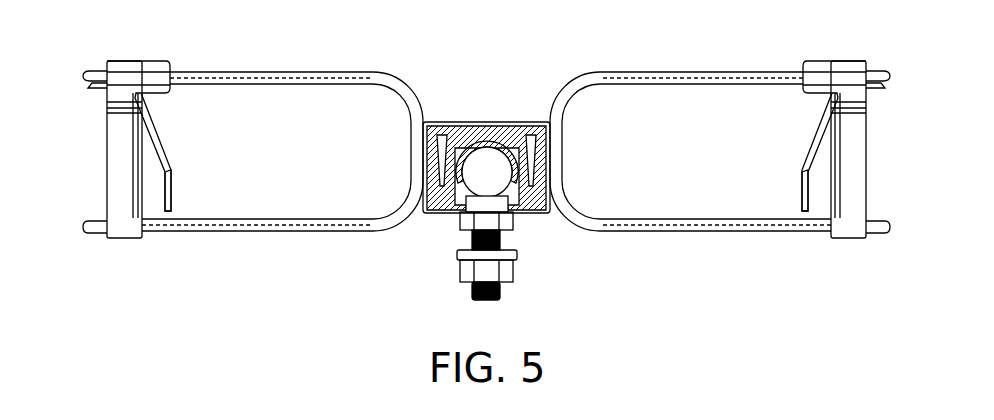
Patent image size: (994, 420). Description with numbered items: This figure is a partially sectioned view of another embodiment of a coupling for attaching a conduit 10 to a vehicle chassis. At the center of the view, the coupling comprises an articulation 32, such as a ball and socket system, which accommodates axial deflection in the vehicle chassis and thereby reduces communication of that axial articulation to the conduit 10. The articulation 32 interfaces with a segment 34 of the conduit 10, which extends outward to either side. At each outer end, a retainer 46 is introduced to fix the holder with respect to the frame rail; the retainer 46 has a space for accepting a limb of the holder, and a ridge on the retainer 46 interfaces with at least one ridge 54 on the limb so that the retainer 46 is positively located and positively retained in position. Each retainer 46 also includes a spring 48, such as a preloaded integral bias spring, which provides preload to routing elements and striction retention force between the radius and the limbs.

The conduit 10 is at (478, 121).
The articulation 32 is at (437, 213).
The segment 34 is at (472, 174).
The retainer 46 is at (152, 103).
The spring 48 is at (177, 185).
The ridge 54 is at (296, 85).